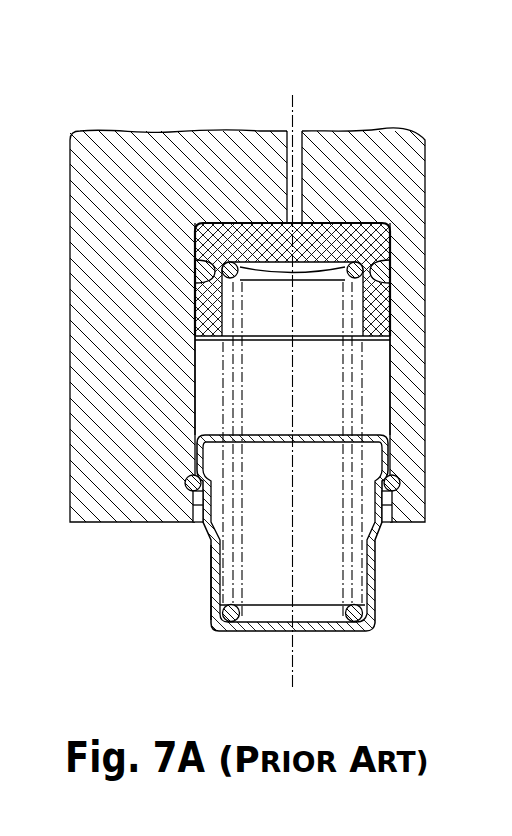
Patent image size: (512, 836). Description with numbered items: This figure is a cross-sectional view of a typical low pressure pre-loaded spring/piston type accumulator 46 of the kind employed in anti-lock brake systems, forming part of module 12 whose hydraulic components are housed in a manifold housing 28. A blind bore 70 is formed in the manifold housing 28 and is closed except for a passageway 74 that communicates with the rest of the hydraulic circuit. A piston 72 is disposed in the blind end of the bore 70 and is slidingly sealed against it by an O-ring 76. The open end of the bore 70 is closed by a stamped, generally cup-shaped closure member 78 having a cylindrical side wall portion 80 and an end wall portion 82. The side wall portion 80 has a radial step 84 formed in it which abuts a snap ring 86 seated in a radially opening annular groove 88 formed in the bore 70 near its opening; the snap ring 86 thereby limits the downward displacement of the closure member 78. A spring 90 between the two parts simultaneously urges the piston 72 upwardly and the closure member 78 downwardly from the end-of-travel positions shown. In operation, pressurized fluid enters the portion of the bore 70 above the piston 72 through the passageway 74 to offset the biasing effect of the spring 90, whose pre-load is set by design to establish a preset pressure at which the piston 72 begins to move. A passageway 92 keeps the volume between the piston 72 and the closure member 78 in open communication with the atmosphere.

The module 12 is at (275, 358).
The manifold housing 28 is at (400, 175).
The passageway 74 is at (294, 166).
The piston 72 is at (392, 318).
The O-ring 76 is at (392, 268).
The spring 90 is at (358, 400).
The passageway 92 is at (295, 633).
The low pressure accumulator 46 is at (307, 533).
The cylindrical side wall portion 80 is at (212, 583).
The closure member 78 is at (333, 630).
The end wall portion 82 is at (257, 625).
The snap ring 86 is at (190, 490).
The annular groove 88 is at (398, 520).
The blind bore 70 is at (197, 525).
The radial step 84 is at (398, 479).